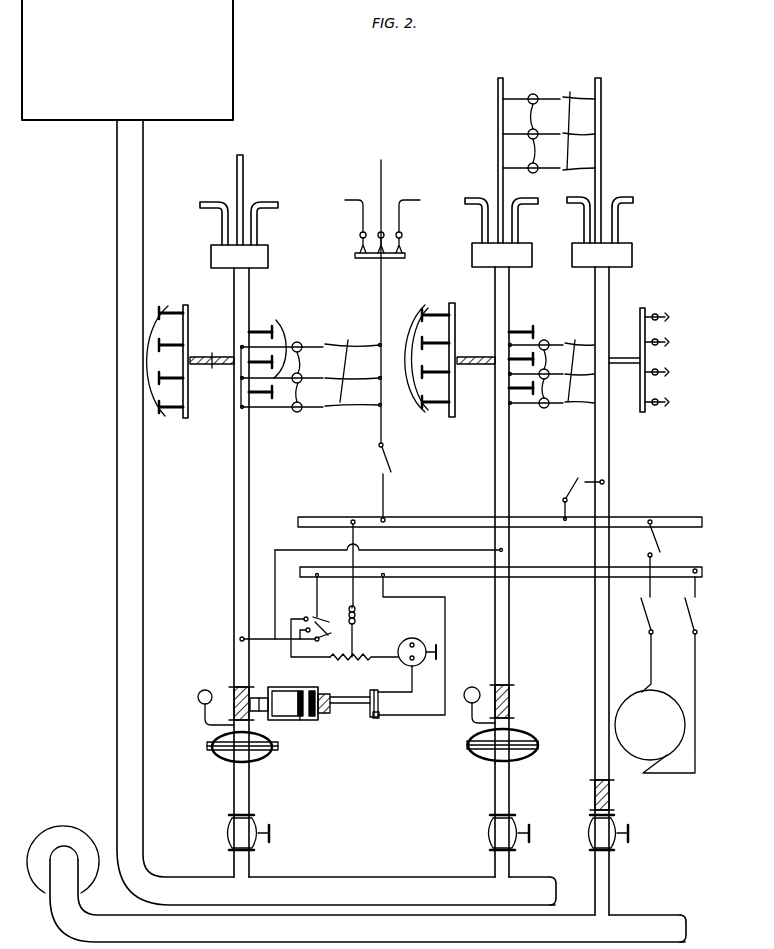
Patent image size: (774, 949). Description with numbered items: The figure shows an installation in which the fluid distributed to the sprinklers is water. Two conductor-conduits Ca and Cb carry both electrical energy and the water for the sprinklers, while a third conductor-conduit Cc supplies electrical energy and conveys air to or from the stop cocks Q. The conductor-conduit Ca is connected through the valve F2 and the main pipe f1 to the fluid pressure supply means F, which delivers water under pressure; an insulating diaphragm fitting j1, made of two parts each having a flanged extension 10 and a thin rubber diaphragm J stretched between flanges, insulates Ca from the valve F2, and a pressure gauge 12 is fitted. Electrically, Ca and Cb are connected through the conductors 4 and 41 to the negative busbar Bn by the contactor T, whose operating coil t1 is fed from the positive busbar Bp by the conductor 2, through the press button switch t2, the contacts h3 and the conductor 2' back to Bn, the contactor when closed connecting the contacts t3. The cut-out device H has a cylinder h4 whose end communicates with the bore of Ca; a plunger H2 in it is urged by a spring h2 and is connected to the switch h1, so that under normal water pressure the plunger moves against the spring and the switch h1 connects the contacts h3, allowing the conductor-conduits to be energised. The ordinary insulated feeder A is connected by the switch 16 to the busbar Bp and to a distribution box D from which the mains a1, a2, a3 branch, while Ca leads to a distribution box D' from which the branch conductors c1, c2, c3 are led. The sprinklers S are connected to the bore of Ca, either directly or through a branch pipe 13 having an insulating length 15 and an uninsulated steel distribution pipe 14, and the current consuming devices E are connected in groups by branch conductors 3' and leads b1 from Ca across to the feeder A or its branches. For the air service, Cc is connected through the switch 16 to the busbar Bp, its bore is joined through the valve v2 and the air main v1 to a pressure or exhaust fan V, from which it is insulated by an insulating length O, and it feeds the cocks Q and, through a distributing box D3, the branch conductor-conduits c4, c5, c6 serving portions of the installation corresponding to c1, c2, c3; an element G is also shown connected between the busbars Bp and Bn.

The fluid pressure supply means F is at (127, 60).
The main pipe f1 is at (368, 880).
The pressure or exhaust fan V is at (65, 828).
The air main v1 is at (573, 916).
The valve v2 is at (613, 838).
The conductor-conduit Ca is at (234, 458).
The conductor-conduit Cb is at (495, 486).
The conductor-conduit Cc is at (609, 290).
The distribution box D' is at (252, 256).
The distribution box D is at (390, 248).
The distributing box D3 is at (632, 250).
The branch conductor c1 is at (221, 221).
The branch conductor c2 is at (243, 166).
The branch conductor c3 is at (258, 221).
The branch conductor-conduit c4 is at (583, 198).
The branch conductor-conduit c5 is at (602, 150).
The branch conductor-conduit c6 is at (619, 212).
The main a1 is at (353, 217).
The main a2 is at (382, 180).
The main a3 is at (409, 217).
The ordinary insulated feeder A is at (384, 441).
The current consuming devices E is at (533, 130).
The conductor wires b1 is at (571, 94).
The spray arc shield S is at (340, 350).
The distribution pipe 14 is at (189, 308).
The branch pipe 13 is at (342, 350).
The insulating length 15 is at (210, 366).
The branch conductors 3' is at (255, 393).
The stop cocks Q is at (668, 398).
The positive busbar Bp is at (645, 513).
The negative busbar Bn is at (569, 580).
The switch 16 is at (379, 466).
The conductor 41 is at (399, 509).
The conductor 2 is at (340, 551).
The conductor 2' is at (421, 646).
The conductor 4 is at (262, 640).
The contacts t3 is at (305, 616).
The contactor T is at (326, 622).
The operating coil t1 is at (357, 618).
The press button switch t2 is at (410, 641).
The cut-out device H is at (261, 734).
The cylinder h4 is at (286, 687).
The spring h2 is at (311, 687).
The contacts h3 is at (375, 690).
The switch h1 is at (372, 719).
The plunger H2 is at (302, 722).
The insulating length O is at (233, 694).
The pressure gauge 12 is at (198, 697).
The insulating diaphragm fitting j1 is at (272, 750).
The diaphragm J is at (488, 755).
The generator G is at (656, 646).
The flanged extension 10 is at (240, 803).
The valve F2 is at (252, 830).